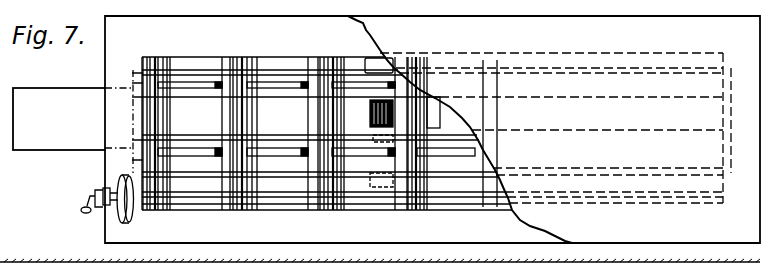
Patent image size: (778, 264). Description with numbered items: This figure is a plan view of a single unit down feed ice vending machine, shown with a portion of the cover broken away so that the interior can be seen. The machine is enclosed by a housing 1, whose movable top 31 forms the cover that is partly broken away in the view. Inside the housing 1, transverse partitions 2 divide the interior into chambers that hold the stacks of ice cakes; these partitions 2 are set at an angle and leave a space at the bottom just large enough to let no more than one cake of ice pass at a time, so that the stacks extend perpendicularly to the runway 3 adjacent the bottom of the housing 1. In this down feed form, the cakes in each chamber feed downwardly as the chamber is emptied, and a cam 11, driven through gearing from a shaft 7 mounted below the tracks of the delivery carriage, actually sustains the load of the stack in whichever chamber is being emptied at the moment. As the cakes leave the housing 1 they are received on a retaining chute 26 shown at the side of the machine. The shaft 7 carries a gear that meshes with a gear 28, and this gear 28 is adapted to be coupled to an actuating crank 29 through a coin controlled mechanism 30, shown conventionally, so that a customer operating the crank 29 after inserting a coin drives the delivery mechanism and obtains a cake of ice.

The housing 1 is at (327, 147).
The transverse partitions 2 is at (312, 60).
The runway 3 is at (316, 119).
The shaft 7 is at (455, 196).
The cam 11 is at (378, 112).
The retaining chute 26 is at (78, 121).
The gear 28 is at (120, 210).
The actuating crank 29 is at (94, 199).
The coin controlled mechanism 30 is at (112, 190).
The movable top 31 is at (555, 128).